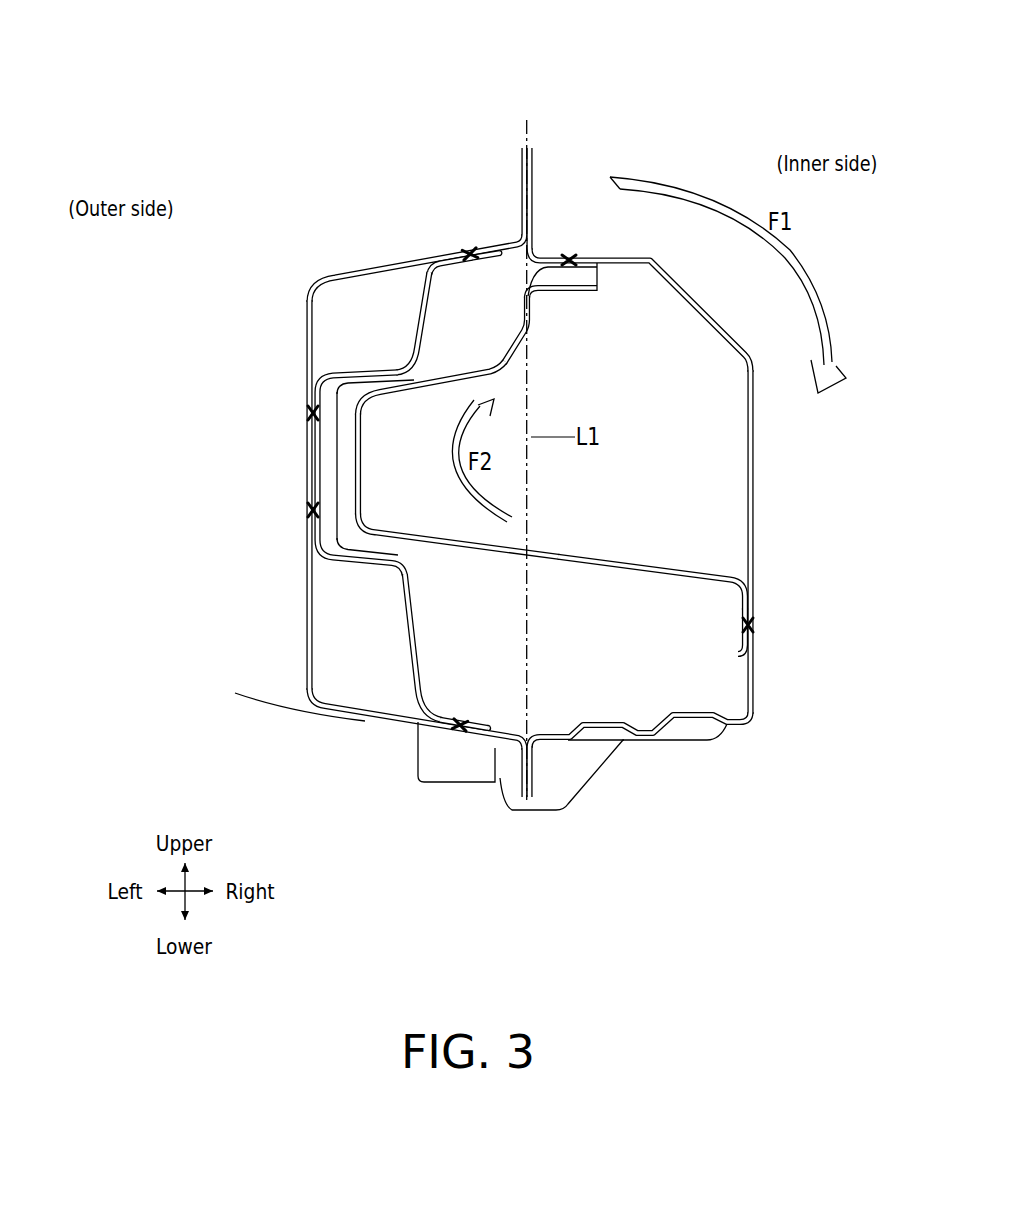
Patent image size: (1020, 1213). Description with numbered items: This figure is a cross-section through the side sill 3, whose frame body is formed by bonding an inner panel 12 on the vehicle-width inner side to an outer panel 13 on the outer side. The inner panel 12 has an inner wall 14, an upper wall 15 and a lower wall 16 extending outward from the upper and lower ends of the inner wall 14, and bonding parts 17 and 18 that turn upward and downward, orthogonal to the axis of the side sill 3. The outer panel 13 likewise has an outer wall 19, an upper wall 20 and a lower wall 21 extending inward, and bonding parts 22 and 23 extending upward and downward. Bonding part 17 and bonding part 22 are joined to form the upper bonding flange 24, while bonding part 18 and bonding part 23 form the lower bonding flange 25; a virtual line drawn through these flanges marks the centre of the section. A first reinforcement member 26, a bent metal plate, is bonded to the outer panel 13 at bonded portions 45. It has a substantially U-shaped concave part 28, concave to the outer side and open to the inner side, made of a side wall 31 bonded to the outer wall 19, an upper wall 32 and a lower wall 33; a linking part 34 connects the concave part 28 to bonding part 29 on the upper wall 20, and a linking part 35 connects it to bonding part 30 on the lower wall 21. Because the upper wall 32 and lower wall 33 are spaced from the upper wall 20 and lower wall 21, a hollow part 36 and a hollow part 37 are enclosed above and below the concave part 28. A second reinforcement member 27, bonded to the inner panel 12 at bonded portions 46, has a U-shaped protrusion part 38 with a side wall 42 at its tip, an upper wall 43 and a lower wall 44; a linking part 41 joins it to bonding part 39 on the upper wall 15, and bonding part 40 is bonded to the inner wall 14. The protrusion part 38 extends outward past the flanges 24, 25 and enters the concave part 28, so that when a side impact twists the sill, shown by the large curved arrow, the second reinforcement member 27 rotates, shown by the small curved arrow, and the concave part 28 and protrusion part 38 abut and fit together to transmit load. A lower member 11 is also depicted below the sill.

The side sill 3 is at (611, 135).
The floor member 11 is at (620, 845).
The inner panel 12 is at (757, 517).
The outer panel 13 is at (309, 282).
The inner wall 14 is at (757, 560).
The upper wall 15 is at (643, 258).
The lower wall 16 is at (709, 742).
The bonding part 17 is at (533, 186).
The bonding part 18 is at (534, 784).
The outer wall 19 is at (306, 315).
The upper wall 20 is at (358, 325).
The lower wall 21 is at (349, 712).
The bonding part 22 is at (521, 186).
The bonding part 23 is at (519, 784).
The bonding flange 24 is at (483, 78).
The bonding flange 25 is at (488, 878).
The first reinforcement member 26 is at (420, 660).
The second reinforcement member 27 is at (653, 578).
The concave part 28 is at (148, 398).
The bonding part 29 is at (498, 250).
The bonding part 30 is at (492, 733).
The side wall 31 is at (315, 447).
The upper wall 32 is at (366, 372).
The lower wall 33 is at (357, 552).
The linking part 34 is at (420, 302).
The linking part 35 is at (410, 645).
The hollow part 36 is at (342, 272).
The hollow part 37 is at (346, 635).
The protrusion part 38 is at (513, 596).
The bonding part 39 is at (592, 293).
The bonding part 40 is at (745, 658).
The linking part 41 is at (528, 332).
The side wall 42 is at (365, 505).
The upper wall 43 is at (407, 396).
The lower wall 44 is at (506, 556).
The bonded portions 45 is at (466, 251).
The bonded portions 46 is at (571, 257).